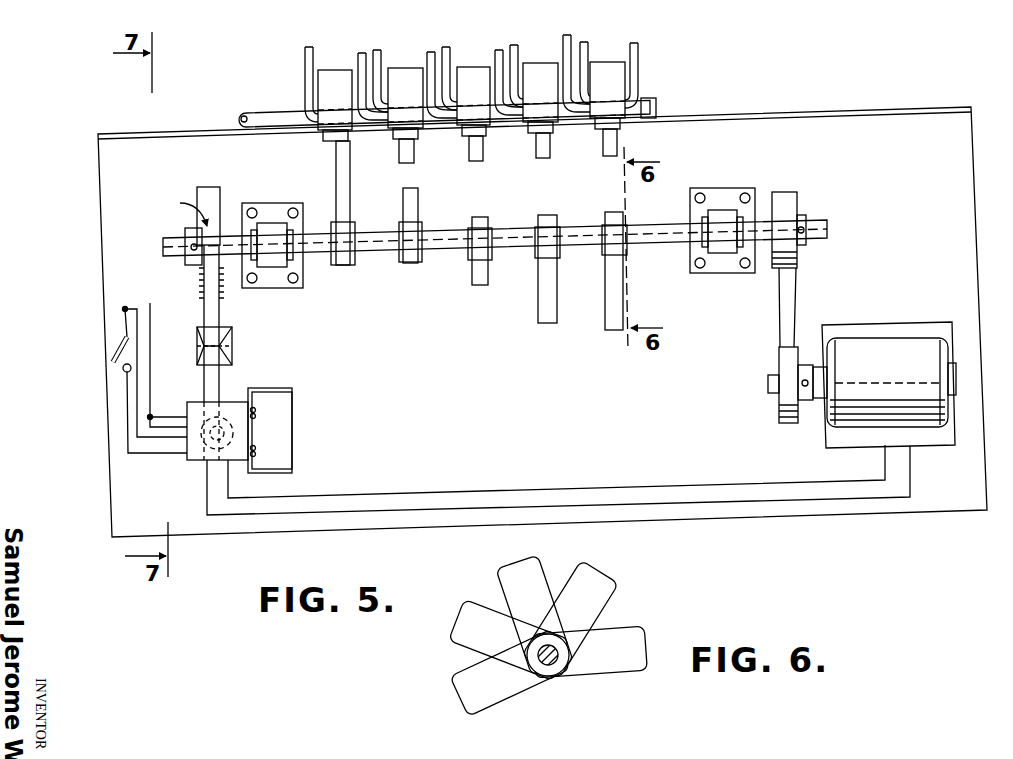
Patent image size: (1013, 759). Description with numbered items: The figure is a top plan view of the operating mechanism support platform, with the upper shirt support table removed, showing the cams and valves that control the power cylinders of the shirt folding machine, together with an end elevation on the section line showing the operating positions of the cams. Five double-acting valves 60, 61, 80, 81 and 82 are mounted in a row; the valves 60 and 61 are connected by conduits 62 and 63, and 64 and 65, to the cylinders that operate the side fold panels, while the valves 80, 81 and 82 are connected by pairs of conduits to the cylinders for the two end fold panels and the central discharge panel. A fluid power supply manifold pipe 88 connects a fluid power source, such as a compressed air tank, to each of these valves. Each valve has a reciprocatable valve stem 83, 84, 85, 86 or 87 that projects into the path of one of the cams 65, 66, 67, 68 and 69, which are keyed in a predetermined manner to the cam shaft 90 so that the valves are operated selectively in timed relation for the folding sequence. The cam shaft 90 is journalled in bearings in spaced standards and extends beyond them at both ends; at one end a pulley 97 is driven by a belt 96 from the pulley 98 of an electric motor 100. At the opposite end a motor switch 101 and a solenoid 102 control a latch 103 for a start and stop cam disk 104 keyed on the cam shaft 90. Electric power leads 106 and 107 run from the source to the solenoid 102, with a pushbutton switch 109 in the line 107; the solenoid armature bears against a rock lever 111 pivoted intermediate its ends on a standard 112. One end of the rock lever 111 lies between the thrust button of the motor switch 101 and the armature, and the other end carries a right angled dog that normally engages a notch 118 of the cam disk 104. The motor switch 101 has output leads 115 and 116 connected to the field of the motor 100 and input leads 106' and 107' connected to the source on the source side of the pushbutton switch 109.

In FIG. 5, the double-acting valve 60 is at (620, 86).
In FIG. 5, the double-acting valve 61 is at (538, 72).
In FIG. 5, the conduit 62 is at (640, 50).
In FIG. 5, the conduit 63 is at (586, 46).
In FIG. 5, the conduit 64 is at (568, 40).
In FIG. 5, the cam 65 is at (605, 314).
In FIG. 6, the cam 65 is at (612, 663).
In FIG. 5, the cam 66 is at (538, 314).
In FIG. 6, the cam 66 is at (598, 596).
In FIG. 5, the cam 67 is at (472, 282).
In FIG. 6, the cam 67 is at (536, 578).
In FIG. 5, the cam 68 is at (403, 208).
In FIG. 6, the cam 68 is at (470, 636).
In FIG. 5, the cam 69 is at (336, 178).
In FIG. 6, the cam 69 is at (482, 682).
In FIG. 5, the double-acting valve 80 is at (470, 72).
In FIG. 5, the double-acting valve 81 is at (403, 72).
In FIG. 5, the double-acting valve 82 is at (336, 74).
In FIG. 5, the valve stem 83 is at (616, 146).
In FIG. 5, the valve stem 84 is at (550, 147).
In FIG. 5, the valve stem 85 is at (483, 148).
In FIG. 5, the valve stem 86 is at (414, 150).
In FIG. 5, the valve stem 87 is at (343, 142).
In FIG. 5, the fluid power supply manifold pipe 88 is at (268, 113).
In FIG. 5, the cam shaft 90 is at (390, 252).
In FIG. 6, the cam shaft 90 is at (553, 665).
In FIG. 5, the belt 96 is at (790, 290).
In FIG. 5, the pulley 97 is at (798, 200).
In FIG. 5, the pulley 98 is at (780, 418).
In FIG. 5, the electric motor 100 is at (884, 385).
In FIG. 5, the motor switch 101 is at (200, 417).
In FIG. 5, the solenoid 102 is at (195, 462).
In FIG. 5, the latch 103 is at (178, 209).
In FIG. 5, the start and stop cam disk 104 is at (214, 196).
In FIG. 5, the electric power lead 106 is at (168, 365).
In FIG. 5, the input lead 106' is at (170, 403).
In FIG. 5, the electric power lead 107 is at (128, 412).
In FIG. 5, the input lead 107' is at (127, 381).
In FIG. 5, the pushbutton switch 109 is at (108, 349).
In FIG. 5, the rock lever 111 is at (203, 312).
In FIG. 5, the standard 112 is at (234, 342).
In FIG. 5, the output lead 115 is at (486, 491).
In FIG. 5, the output lead 116 is at (565, 504).
In FIG. 5, the notch 118 is at (190, 243).